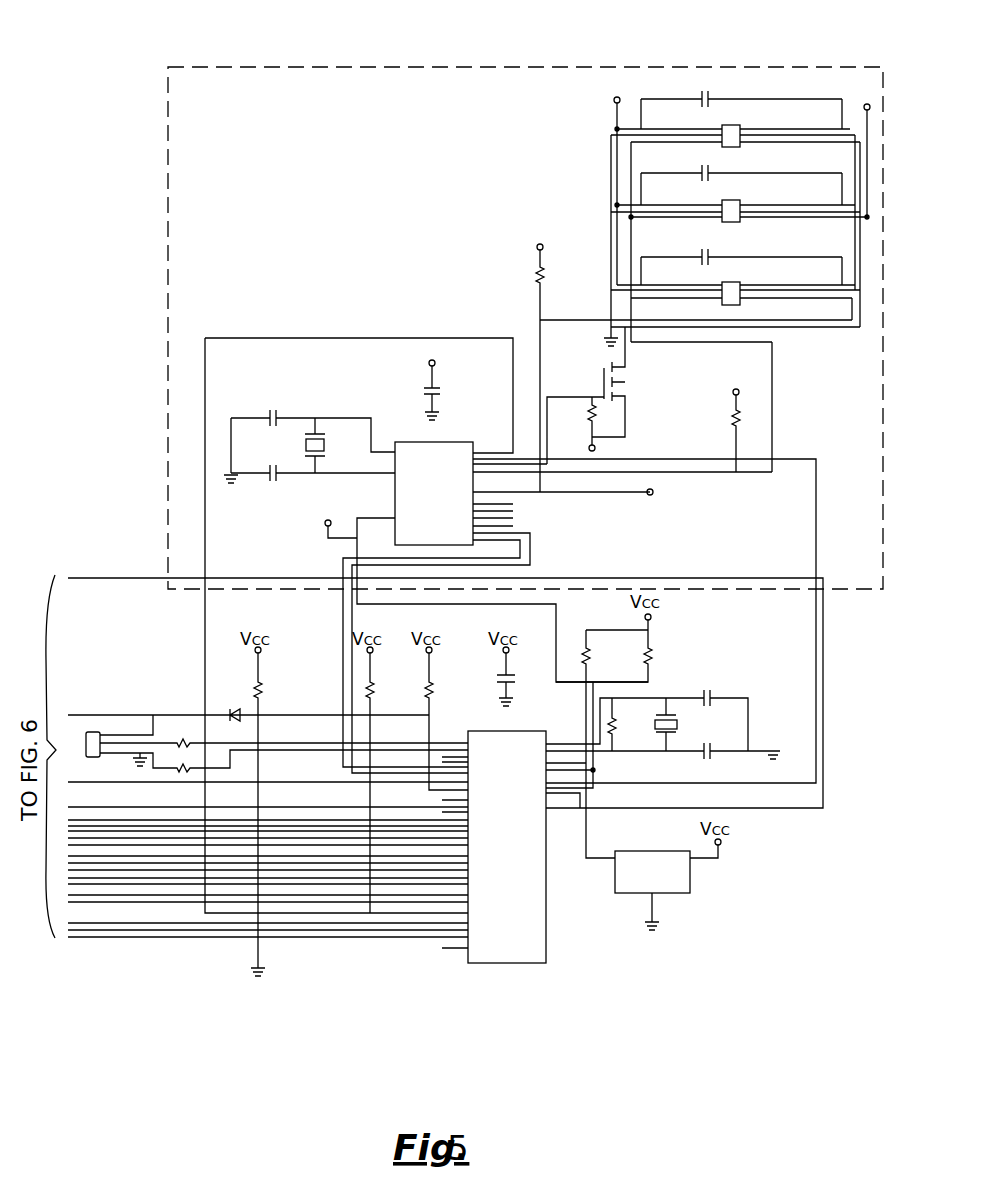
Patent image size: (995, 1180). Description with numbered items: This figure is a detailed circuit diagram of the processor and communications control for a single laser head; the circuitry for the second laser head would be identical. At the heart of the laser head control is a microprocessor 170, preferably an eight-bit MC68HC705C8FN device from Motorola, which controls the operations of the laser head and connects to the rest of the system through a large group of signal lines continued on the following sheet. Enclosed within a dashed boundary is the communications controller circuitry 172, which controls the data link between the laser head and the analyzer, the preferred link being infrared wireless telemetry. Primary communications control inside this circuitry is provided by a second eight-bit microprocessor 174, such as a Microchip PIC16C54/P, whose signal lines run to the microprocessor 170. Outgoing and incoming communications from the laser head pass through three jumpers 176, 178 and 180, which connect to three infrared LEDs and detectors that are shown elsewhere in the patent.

The microprocessor 170 is at (540, 963).
The communications controller circuitry 172 is at (713, 67).
The microprocessor 174 is at (395, 500).
The jumper 176 is at (722, 142).
The jumper 178 is at (722, 217).
The jumper 180 is at (739, 283).